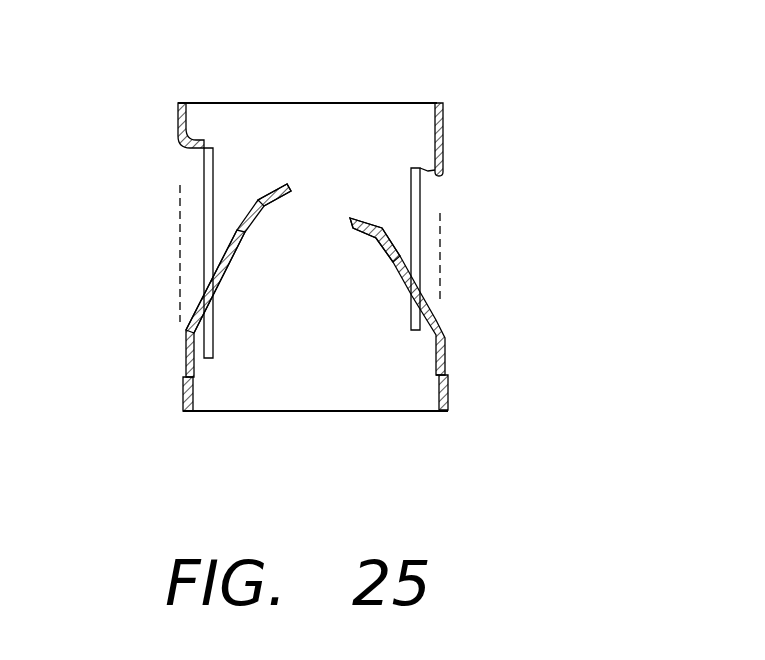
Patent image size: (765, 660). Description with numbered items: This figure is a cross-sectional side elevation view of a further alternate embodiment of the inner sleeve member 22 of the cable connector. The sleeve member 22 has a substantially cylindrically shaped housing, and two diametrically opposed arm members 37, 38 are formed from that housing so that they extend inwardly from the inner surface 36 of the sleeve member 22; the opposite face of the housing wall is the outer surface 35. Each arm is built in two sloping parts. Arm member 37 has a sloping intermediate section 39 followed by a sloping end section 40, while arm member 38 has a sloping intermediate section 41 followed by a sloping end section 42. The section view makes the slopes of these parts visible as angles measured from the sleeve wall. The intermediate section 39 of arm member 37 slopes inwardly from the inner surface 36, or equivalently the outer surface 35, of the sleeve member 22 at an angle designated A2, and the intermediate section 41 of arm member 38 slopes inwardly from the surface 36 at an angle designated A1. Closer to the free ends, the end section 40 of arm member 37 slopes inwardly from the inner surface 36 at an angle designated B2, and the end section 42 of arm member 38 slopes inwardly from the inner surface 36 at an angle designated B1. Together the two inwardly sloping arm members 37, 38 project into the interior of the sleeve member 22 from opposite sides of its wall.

The inner sleeve member 22 is at (470, 128).
The outer surface 35 is at (448, 392).
The inner surface 36 is at (197, 368).
The arm member 37 is at (456, 314).
The arm member 38 is at (176, 312).
The intermediate section 39 is at (441, 248).
The end section 40 is at (353, 225).
The intermediate section 41 is at (223, 280).
The end section 42 is at (275, 202).
The angle B1 is at (258, 188).
The angle B2 is at (370, 223).
The angle A1 is at (168, 250).
The angle A2 is at (440, 262).